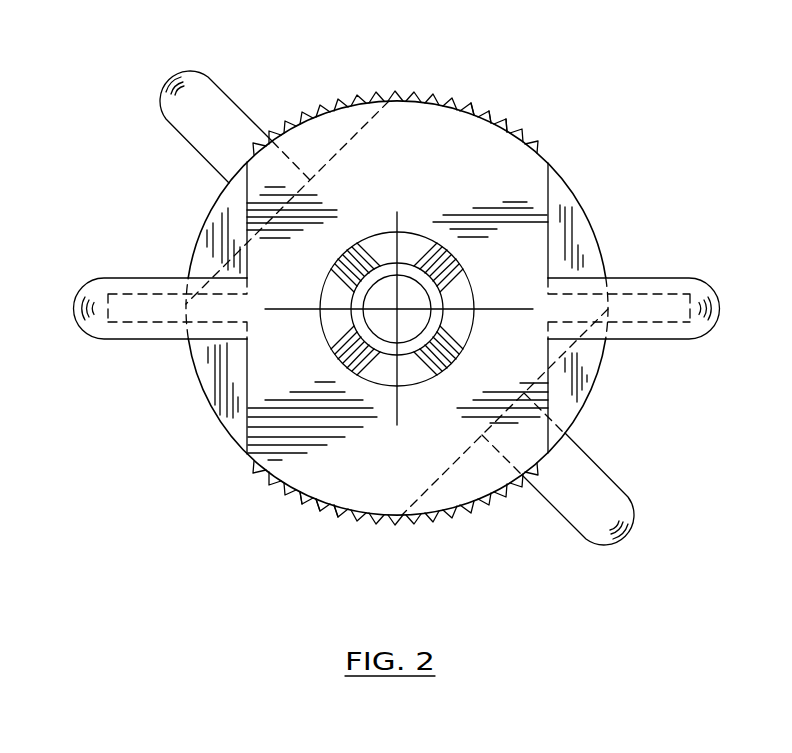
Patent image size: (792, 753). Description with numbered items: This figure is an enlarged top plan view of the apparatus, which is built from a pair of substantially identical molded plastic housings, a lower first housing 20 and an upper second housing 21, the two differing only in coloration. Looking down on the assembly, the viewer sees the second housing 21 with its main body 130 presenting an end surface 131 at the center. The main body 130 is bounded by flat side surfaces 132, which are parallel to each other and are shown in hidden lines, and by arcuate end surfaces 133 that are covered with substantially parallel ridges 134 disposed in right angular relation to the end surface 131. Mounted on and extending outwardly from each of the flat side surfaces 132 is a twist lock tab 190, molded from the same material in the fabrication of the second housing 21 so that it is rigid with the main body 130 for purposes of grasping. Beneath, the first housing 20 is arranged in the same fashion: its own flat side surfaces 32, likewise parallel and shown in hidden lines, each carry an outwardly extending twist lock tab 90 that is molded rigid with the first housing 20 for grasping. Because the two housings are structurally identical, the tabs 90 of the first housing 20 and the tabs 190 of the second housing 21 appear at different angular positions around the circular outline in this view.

The first housing 20 is at (548, 522).
The second housing 21 is at (590, 198).
The flat side surfaces 32 is at (340, 150).
The twist lock tab 90 is at (238, 103).
The main body 130 is at (500, 173).
The end surface 131 is at (473, 186).
The flat side surfaces 132 is at (550, 238).
The arcuate end surfaces 133 is at (445, 102).
The ridges 134 is at (512, 130).
The twist lock tab 190 is at (100, 339).